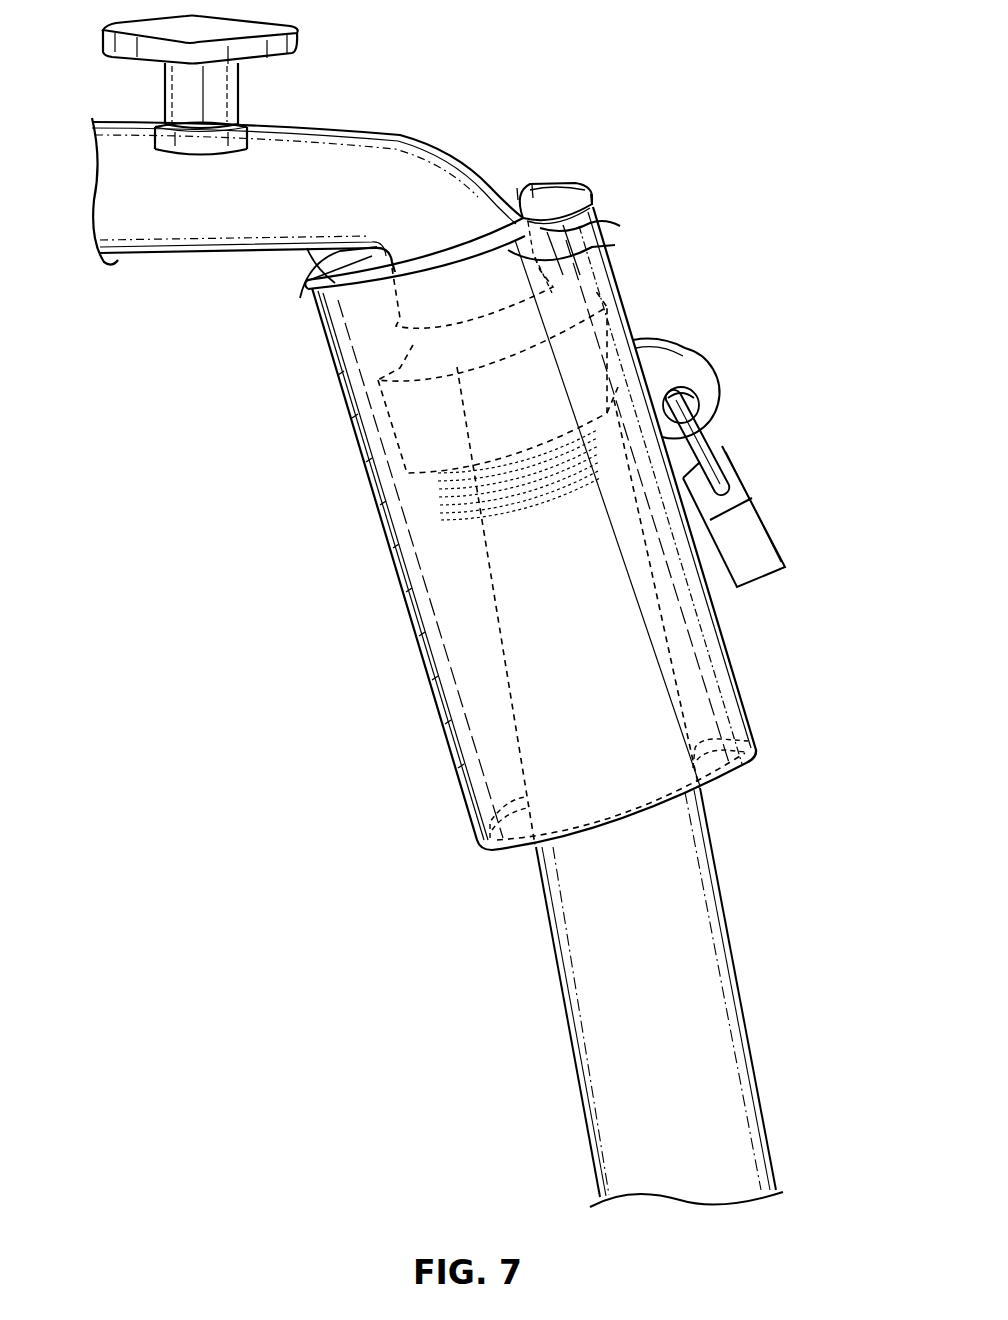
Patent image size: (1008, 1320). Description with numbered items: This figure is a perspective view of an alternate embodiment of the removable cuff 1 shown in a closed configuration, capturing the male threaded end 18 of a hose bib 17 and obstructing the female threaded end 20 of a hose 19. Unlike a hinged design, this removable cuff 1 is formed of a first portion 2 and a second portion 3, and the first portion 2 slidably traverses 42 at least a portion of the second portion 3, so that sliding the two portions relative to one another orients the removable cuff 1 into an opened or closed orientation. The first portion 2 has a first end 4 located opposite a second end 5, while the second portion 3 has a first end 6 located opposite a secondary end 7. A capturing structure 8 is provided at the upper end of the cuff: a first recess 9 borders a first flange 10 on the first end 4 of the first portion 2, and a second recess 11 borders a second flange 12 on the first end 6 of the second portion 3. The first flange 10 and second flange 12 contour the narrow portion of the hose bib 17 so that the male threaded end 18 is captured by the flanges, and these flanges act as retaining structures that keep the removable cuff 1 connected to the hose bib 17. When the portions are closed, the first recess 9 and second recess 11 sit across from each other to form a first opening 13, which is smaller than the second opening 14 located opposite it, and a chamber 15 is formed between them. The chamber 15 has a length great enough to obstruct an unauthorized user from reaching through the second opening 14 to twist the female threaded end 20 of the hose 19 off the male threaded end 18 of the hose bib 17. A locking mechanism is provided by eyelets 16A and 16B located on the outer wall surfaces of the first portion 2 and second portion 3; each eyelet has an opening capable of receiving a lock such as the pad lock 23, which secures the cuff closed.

The removable cuff 1 is at (694, 274).
The first portion 2 is at (320, 330).
The second portion 3 is at (548, 192).
The first end 4 is at (293, 283).
The second end 5 is at (504, 848).
The first end 6 is at (517, 186).
The secondary end 7 is at (750, 777).
The capturing structure 8 is at (546, 158).
The first recess 9 is at (596, 224).
The first flange 10 is at (598, 247).
The second recess 11 is at (533, 186).
The second flange 12 is at (572, 190).
The first opening 13 is at (593, 203).
The second opening 14 is at (713, 773).
The chamber 15 is at (473, 650).
The eyelet 16A is at (707, 408).
The eyelet 16B is at (653, 333).
The hose bib 17 is at (176, 232).
The male threaded end 18 is at (403, 347).
The hose 19 is at (713, 953).
The female threaded end 20 is at (423, 448).
The pad lock 23 is at (753, 523).
The slidably traverses 42 is at (444, 731).